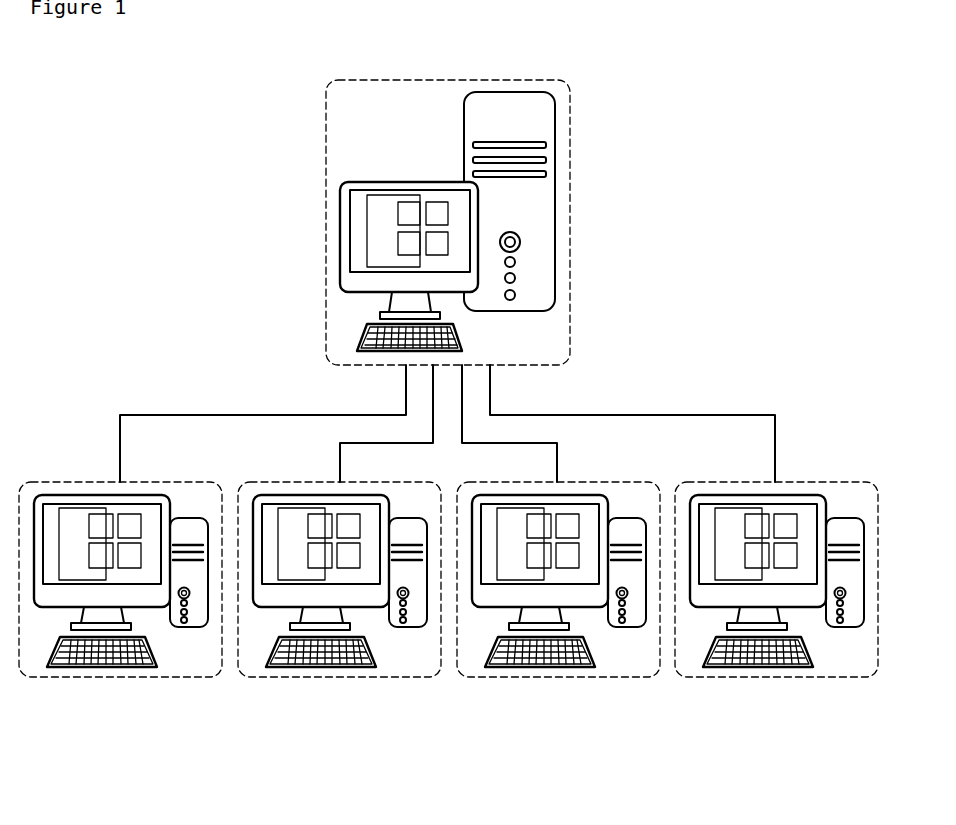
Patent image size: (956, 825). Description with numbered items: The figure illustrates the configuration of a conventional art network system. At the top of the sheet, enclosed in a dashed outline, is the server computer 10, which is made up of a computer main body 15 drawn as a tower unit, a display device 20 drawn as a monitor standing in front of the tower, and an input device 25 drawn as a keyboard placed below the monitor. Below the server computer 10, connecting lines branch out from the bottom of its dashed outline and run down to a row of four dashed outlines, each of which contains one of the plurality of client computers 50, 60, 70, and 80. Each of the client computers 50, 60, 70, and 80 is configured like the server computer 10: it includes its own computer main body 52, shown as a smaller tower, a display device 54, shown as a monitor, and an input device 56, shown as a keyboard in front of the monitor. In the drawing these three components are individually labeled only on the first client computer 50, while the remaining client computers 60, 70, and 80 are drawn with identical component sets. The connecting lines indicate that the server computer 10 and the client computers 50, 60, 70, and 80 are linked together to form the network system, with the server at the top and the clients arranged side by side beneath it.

The server computer 10 is at (570, 248).
The computer main body 15 is at (555, 169).
The display device 20 is at (340, 238).
The input device 25 is at (357, 344).
The client computer 50 is at (120, 593).
The computer main body 52 is at (189, 534).
The display device 54 is at (102, 534).
The input device 56 is at (102, 680).
The client computer 60 is at (339, 615).
The client computer 70 is at (558, 615).
The client computer 80 is at (776, 615).